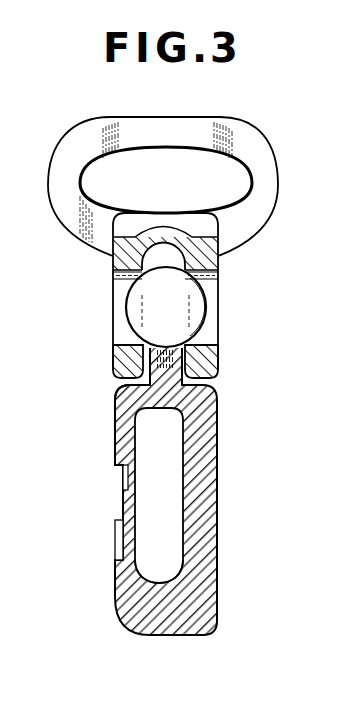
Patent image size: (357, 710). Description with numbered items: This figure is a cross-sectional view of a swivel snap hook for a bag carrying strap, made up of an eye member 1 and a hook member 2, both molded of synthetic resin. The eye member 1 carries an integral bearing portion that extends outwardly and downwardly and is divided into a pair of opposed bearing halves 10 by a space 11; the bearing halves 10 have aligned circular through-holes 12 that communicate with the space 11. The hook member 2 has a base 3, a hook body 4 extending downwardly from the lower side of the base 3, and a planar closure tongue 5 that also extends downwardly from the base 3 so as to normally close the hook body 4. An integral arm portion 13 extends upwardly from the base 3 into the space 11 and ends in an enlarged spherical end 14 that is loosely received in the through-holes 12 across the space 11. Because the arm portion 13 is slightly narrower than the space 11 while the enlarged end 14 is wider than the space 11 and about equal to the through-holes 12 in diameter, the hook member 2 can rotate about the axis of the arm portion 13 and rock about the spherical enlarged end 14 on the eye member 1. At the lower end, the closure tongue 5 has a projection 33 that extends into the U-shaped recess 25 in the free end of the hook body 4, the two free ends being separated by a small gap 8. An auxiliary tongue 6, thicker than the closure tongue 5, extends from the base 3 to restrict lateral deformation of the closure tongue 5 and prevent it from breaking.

The eye member 1 is at (270, 143).
The hook member 2 is at (230, 442).
The base 3 is at (123, 402).
The hook body 4 is at (213, 520).
The closure tongue 5 is at (122, 483).
The auxiliary tongue 6 is at (118, 460).
The gap 8 is at (123, 552).
The bearing halves 10 is at (118, 363).
The space 11 is at (166, 242).
The through-holes 12 is at (113, 280).
The arm portion 13 is at (176, 353).
The enlarged end 14 is at (175, 312).
The U-shaped recess 25 is at (120, 558).
The projection 33 is at (135, 505).